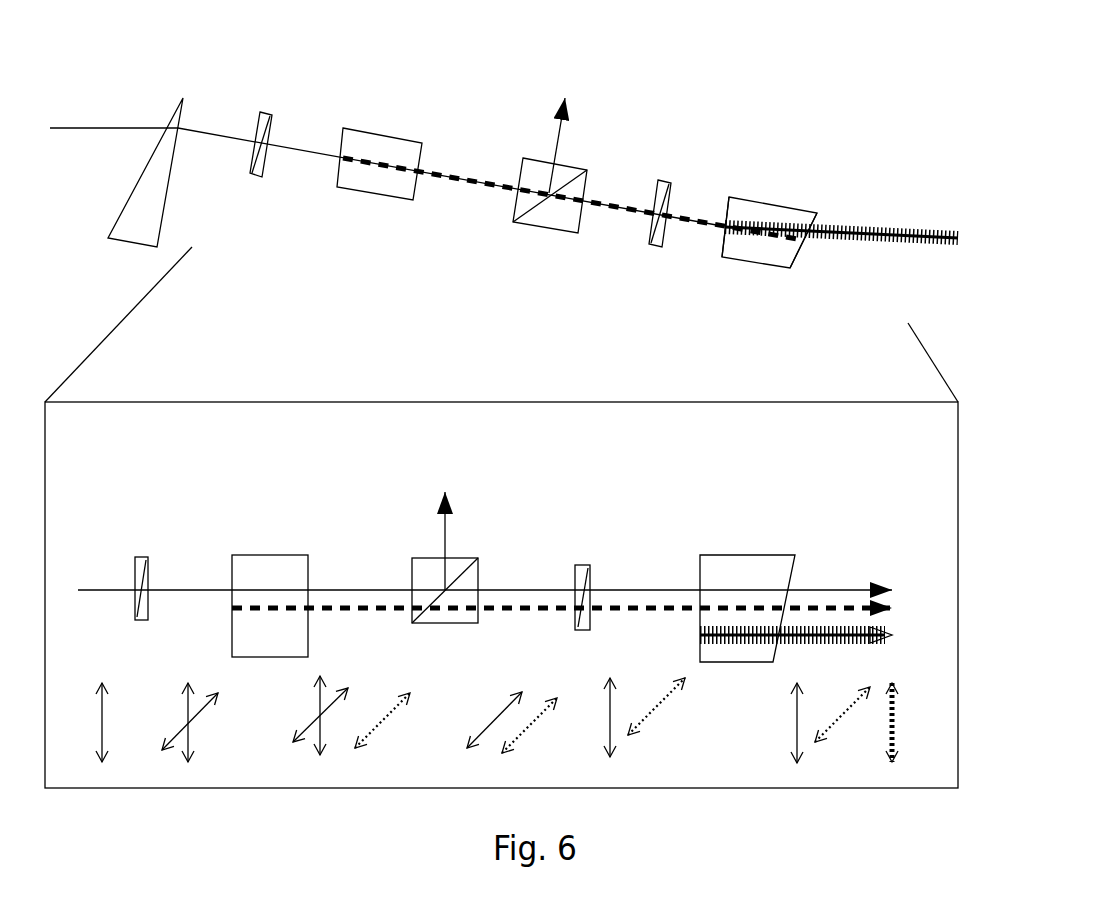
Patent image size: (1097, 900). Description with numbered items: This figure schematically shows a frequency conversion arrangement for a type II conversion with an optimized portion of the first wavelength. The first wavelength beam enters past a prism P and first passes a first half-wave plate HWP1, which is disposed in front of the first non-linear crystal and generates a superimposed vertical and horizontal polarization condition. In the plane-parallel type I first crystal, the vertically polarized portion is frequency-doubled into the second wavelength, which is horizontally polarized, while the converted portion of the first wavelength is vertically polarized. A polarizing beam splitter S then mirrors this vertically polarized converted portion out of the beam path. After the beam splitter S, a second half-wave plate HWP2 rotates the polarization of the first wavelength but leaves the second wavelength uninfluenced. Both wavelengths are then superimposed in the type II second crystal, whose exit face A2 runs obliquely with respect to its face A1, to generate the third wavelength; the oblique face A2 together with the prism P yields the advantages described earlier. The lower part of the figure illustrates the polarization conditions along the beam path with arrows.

The prism P is at (178, 100).
The first λ/2 wave plate HWP1 is at (267, 110).
The polarizing beam splitter S is at (528, 163).
The second λ/2 wave plate HWP2 is at (650, 247).
The entry face of the second non-linear crystal A1 is at (722, 246).
The exit face of the second non-linear crystal A2 is at (792, 262).